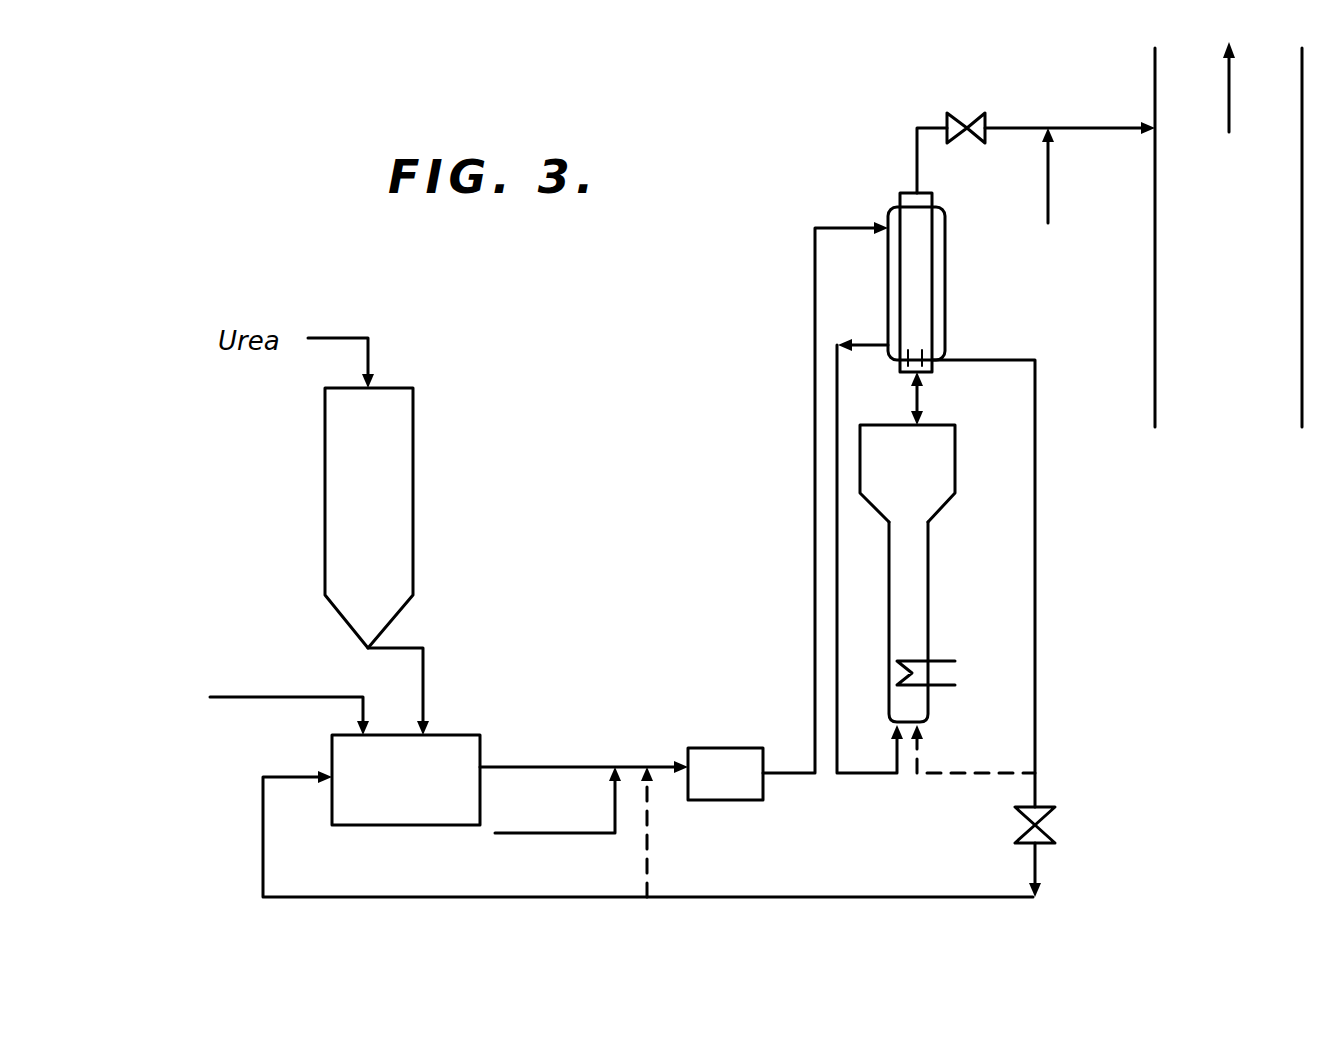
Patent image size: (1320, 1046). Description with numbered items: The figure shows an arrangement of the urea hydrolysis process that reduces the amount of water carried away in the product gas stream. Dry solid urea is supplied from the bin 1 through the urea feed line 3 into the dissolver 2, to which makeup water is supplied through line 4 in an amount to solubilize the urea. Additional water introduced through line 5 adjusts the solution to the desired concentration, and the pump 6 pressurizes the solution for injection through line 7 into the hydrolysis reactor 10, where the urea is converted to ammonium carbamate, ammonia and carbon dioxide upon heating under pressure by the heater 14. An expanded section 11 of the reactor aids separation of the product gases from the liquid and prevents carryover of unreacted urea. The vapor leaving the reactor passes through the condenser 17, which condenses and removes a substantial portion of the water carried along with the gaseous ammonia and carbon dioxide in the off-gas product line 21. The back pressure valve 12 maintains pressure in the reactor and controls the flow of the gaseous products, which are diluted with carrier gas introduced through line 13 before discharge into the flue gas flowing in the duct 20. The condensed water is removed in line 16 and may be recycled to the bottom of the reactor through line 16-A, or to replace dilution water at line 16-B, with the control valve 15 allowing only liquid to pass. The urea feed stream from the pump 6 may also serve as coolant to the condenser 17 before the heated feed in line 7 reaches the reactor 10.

The bin 1 is at (372, 506).
The dissolver 2 is at (444, 782).
The urea feed line 3 is at (423, 675).
The makeup water line 4 is at (233, 698).
The dilution water line 5 is at (585, 833).
The pump 6 is at (733, 760).
The feed line 7 is at (860, 773).
The hydrolysis reactor 10 is at (930, 597).
The expanded section 11 is at (913, 482).
The back pressure valve 12 is at (962, 115).
The carrier gas line 13 is at (1050, 190).
The heater 14 is at (940, 688).
The control valve 15 is at (1052, 822).
The condensate line 16 is at (1035, 622).
The recycle line 16-A is at (955, 778).
The recycle line 16-B is at (647, 855).
The condenser 17 is at (920, 287).
The duct 20 is at (1228, 207).
The off-gas product line 21 is at (1092, 128).